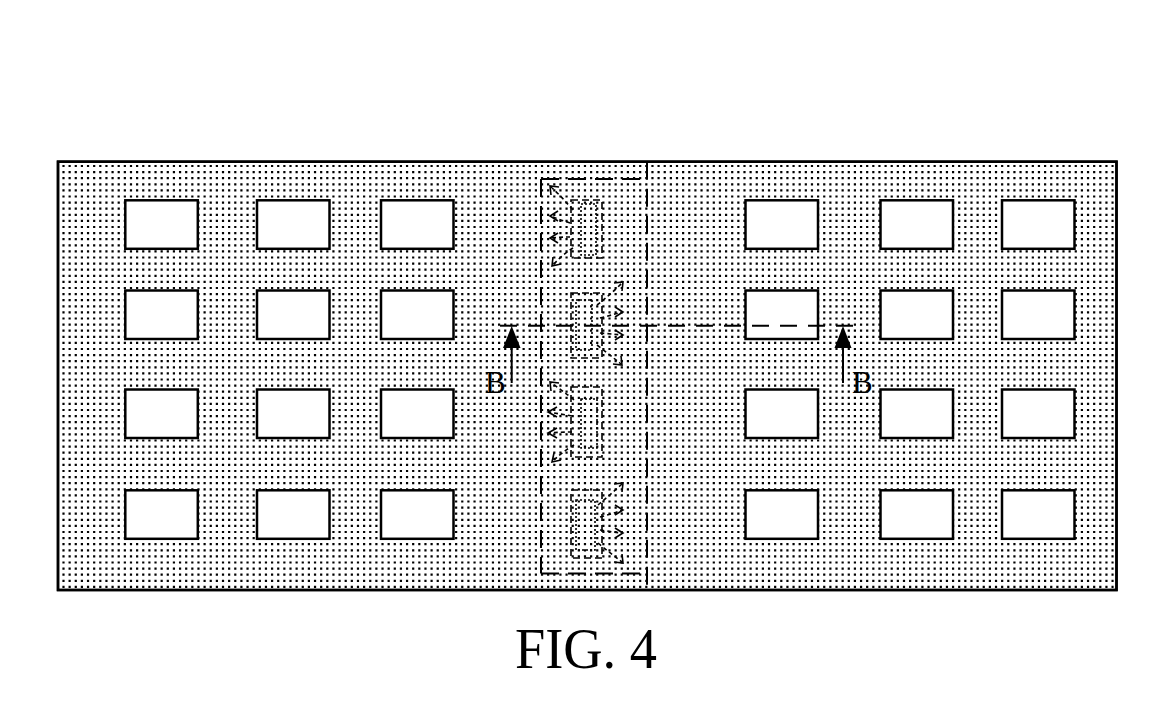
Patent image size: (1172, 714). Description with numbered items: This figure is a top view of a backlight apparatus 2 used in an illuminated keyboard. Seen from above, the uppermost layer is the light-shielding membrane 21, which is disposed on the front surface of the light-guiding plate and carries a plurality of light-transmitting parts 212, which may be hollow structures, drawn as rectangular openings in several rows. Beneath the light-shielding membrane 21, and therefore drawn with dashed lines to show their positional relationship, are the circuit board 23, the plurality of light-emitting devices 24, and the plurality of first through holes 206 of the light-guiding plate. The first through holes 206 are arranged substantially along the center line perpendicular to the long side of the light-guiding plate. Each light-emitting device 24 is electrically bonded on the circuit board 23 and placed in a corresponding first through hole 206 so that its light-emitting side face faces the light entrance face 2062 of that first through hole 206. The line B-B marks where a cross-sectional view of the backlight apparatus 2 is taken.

The backlight apparatus 2 is at (519, 92).
The light-shielding membrane 21 is at (353, 190).
The first through holes 206 is at (577, 201).
The circuit board 23 is at (648, 200).
The light-transmitting parts 212 is at (782, 202).
The light-emitting devices 24 is at (595, 225).
The light entrance face 2062 is at (735, 386).